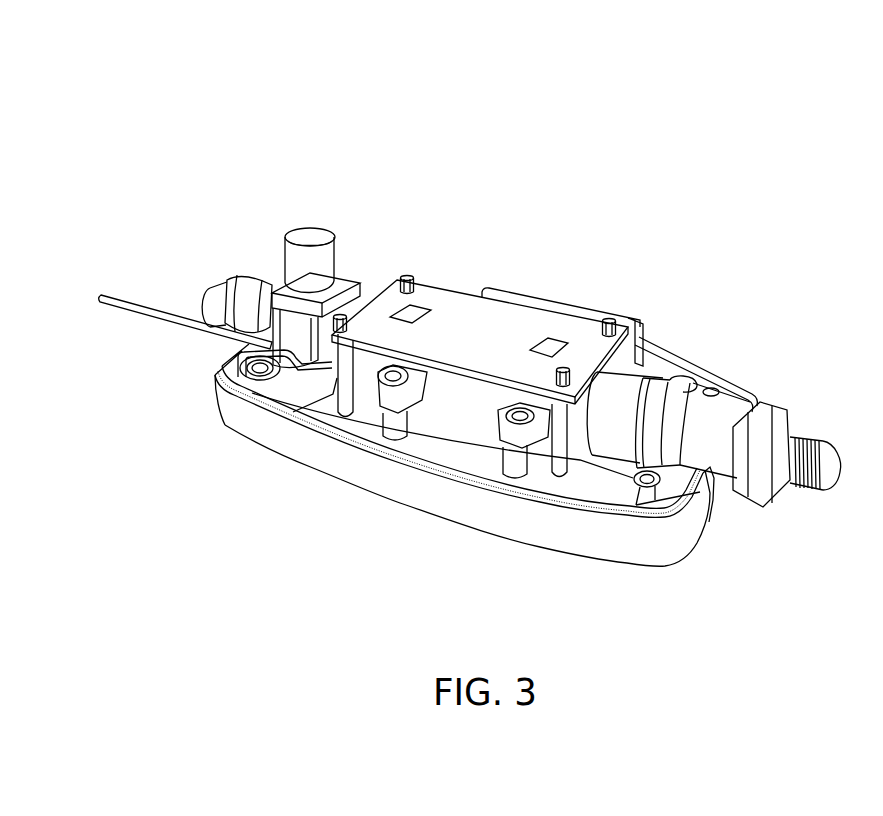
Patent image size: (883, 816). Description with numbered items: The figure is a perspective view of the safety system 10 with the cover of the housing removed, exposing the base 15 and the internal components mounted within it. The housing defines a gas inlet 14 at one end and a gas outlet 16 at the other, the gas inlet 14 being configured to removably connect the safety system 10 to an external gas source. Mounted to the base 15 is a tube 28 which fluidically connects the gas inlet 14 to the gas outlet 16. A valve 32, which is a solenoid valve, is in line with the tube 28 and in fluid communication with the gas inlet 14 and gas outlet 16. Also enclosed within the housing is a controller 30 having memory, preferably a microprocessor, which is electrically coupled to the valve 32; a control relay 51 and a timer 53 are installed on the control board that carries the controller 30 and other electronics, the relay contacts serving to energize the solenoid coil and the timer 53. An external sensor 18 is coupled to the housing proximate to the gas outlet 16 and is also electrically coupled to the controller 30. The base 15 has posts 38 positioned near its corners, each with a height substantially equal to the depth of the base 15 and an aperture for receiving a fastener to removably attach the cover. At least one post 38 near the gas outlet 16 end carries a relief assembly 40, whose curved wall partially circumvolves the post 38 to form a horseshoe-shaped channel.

The safety system 10 is at (505, 37).
The gas inlet 14 is at (784, 488).
The base 15 is at (381, 492).
The gas outlet 16 is at (243, 277).
The external sensor 18 is at (130, 313).
The tube 28 is at (477, 393).
The controller 30 is at (468, 305).
The valve 32 is at (320, 233).
The post 38 is at (660, 487).
The relief assembly 40 is at (250, 390).
The control relay 51 is at (548, 340).
The timer 53 is at (413, 308).